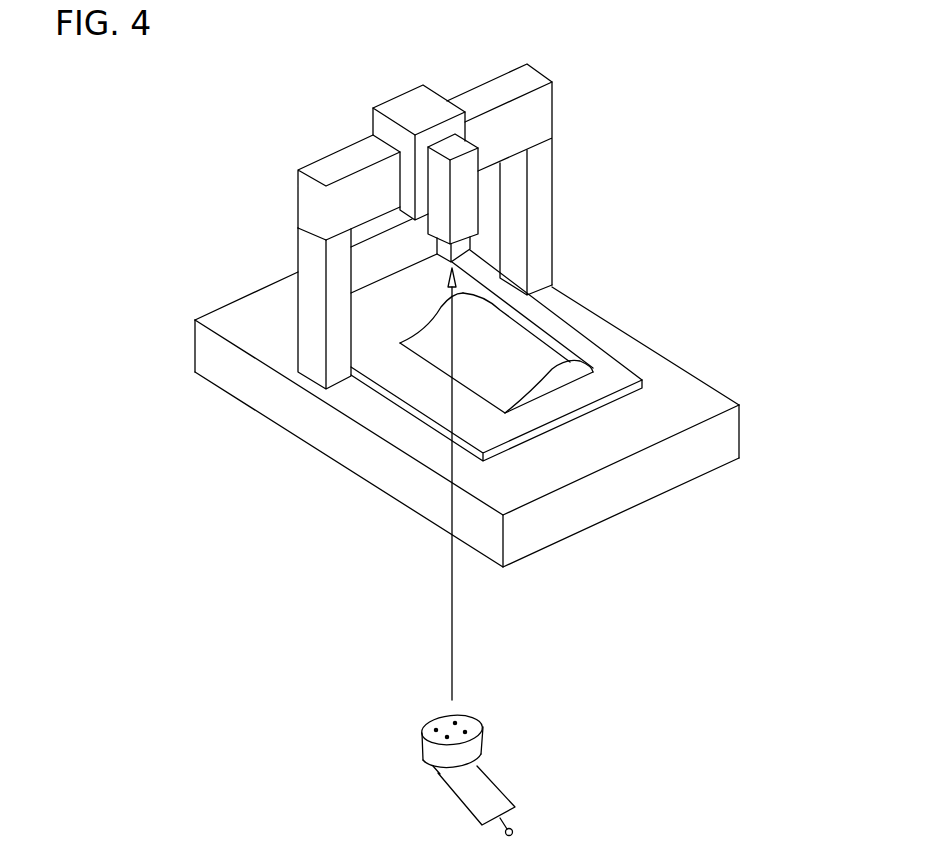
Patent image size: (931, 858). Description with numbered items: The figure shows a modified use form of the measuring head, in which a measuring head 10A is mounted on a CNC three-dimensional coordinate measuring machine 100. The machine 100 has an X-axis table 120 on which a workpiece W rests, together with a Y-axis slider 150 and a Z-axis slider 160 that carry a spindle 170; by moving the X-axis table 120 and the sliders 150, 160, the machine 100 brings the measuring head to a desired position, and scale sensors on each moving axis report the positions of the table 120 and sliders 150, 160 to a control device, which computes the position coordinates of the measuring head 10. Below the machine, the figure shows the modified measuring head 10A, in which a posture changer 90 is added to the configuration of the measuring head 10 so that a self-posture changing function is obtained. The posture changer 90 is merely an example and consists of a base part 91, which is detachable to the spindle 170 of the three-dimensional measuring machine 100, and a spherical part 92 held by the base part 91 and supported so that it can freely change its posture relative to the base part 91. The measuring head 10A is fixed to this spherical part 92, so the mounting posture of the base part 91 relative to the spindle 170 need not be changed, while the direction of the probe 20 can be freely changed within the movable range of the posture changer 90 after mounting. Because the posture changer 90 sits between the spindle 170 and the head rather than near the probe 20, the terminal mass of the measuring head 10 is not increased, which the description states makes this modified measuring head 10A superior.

The three-dimensional coordinate measuring machine 100 is at (744, 246).
The X-axis table 120 is at (628, 364).
The Y-axis slider 150 is at (411, 103).
The Z-axis slider 160 is at (437, 191).
The spindle 170 is at (466, 247).
The workpiece W is at (496, 353).
The measuring head 10A is at (483, 774).
The measuring head 10 is at (488, 790).
The probe 20 is at (548, 819).
The posture changer 90 is at (391, 763).
The base part 91 is at (428, 754).
The spherical part 92 is at (440, 773).